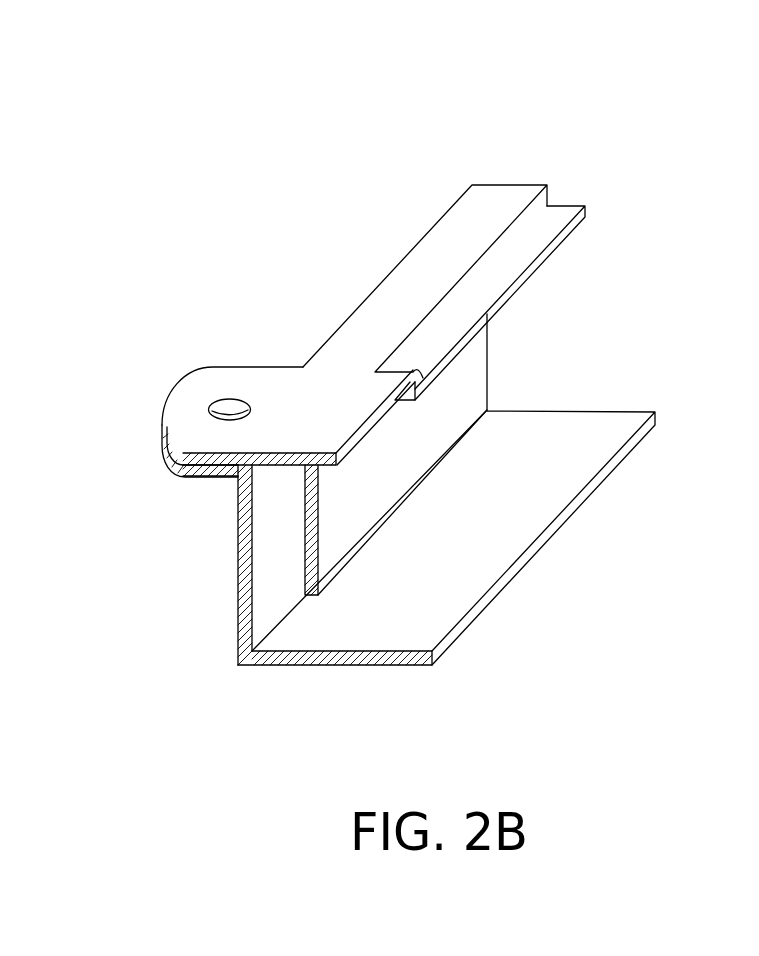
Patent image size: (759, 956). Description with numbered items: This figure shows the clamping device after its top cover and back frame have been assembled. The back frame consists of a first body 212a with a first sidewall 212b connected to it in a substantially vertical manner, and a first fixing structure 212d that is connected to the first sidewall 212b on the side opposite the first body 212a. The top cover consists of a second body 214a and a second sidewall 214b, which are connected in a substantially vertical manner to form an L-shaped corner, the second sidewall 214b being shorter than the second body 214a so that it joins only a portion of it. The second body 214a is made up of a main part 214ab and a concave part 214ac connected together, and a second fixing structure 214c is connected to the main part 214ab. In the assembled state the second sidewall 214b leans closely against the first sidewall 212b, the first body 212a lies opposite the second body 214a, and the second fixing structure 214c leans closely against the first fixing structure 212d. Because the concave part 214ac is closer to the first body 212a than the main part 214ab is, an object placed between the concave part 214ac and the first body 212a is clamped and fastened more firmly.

The first body 212a is at (340, 658).
The first sidewall 212b is at (237, 568).
The first fixing structure 212d is at (207, 470).
The second body 214a is at (343, 258).
The main part 214ab is at (494, 203).
The concave part 214ac is at (550, 228).
The second sidewall 214b is at (310, 518).
The second fixing structure 214c is at (212, 453).